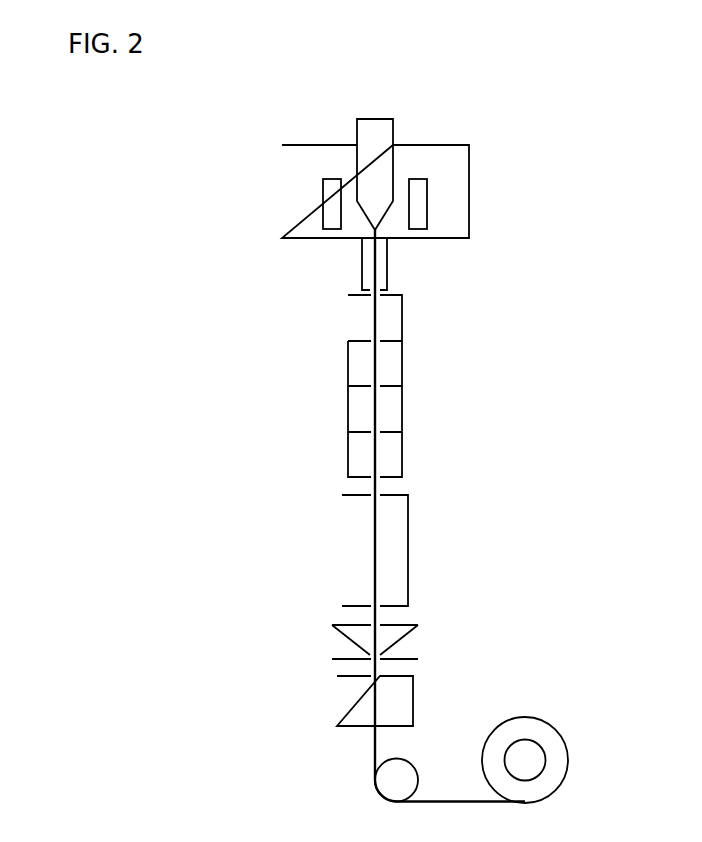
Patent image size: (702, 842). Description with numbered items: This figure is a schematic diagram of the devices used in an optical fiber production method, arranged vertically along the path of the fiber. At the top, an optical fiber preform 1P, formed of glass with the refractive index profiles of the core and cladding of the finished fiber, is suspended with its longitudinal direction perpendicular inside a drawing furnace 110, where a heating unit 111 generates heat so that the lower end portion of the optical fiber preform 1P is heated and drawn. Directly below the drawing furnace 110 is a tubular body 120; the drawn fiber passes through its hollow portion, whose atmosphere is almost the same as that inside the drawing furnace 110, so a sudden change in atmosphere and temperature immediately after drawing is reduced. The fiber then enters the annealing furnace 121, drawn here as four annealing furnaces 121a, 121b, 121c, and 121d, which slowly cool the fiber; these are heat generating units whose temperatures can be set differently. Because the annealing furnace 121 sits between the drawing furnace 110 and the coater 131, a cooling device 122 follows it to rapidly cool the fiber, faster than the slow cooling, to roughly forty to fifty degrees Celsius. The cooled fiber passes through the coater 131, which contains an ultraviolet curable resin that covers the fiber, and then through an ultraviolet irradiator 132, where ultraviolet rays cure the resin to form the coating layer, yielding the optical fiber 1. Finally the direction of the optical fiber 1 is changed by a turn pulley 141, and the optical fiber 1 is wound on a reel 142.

The optical fiber 1 is at (377, 754).
The optical fiber preform 1P is at (376, 178).
The drawing furnace 110 is at (470, 160).
The heating unit 111 is at (417, 207).
The tubular body 120 is at (380, 270).
The annealing furnace 121 is at (449, 384).
The annealing furnace 121a is at (387, 320).
The annealing furnace 121b is at (388, 368).
The annealing furnace 121c is at (388, 413).
The annealing furnace 121d is at (422, 454).
The cooling device 122 is at (388, 532).
The coater 131 is at (387, 633).
The ultraviolet irradiator 132 is at (388, 690).
The turn pulley 141 is at (393, 770).
The reel 142 is at (522, 760).